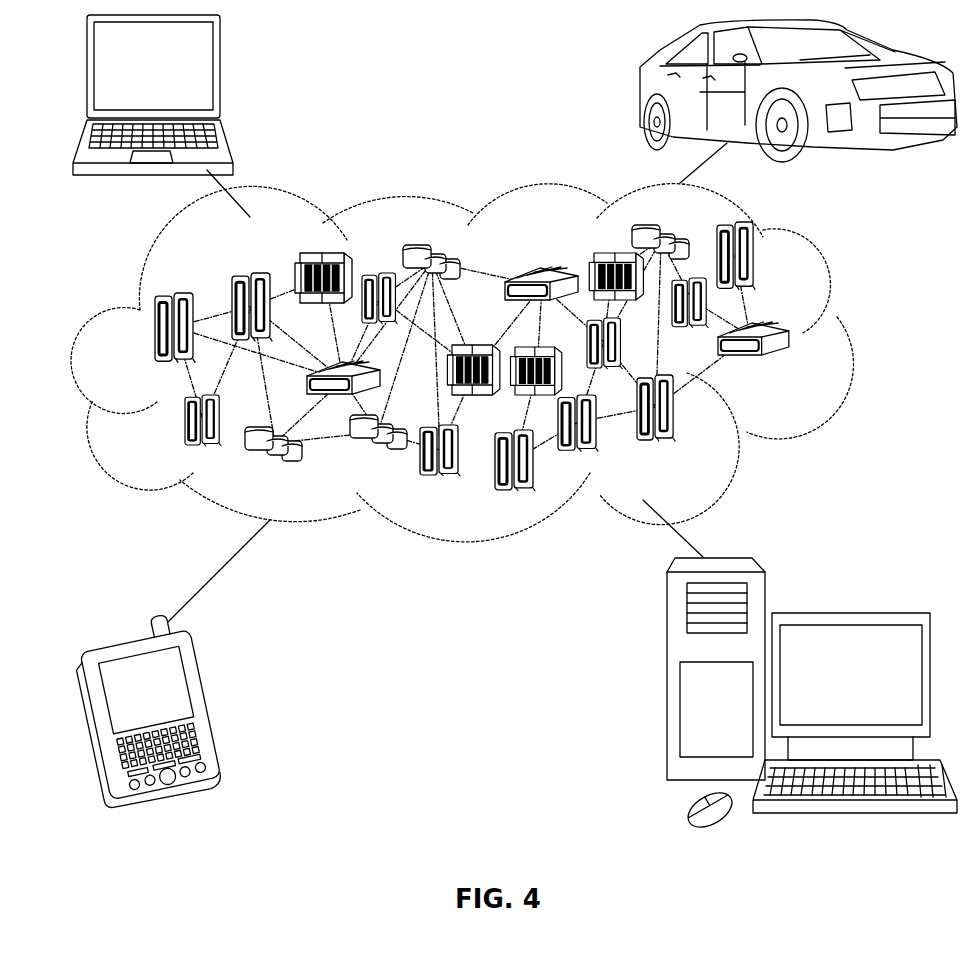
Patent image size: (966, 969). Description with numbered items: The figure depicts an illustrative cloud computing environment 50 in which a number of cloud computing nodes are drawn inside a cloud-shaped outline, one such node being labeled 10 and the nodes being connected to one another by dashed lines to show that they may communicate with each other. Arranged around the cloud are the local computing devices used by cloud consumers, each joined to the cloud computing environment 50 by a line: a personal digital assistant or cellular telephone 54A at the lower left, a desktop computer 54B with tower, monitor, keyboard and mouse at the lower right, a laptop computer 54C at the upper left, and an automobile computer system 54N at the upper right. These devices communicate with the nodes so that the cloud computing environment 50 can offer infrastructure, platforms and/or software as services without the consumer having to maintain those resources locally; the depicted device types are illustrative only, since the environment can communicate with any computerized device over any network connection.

The cloud computing environment 50 is at (490, 363).
The cloud computing node 10 is at (797, 368).
The personal digital assistant (PDA) or cellular telephone 54A is at (210, 704).
The desktop computer 54B is at (847, 612).
The laptop computer 54C is at (221, 76).
The automobile computer system 54N is at (640, 92).